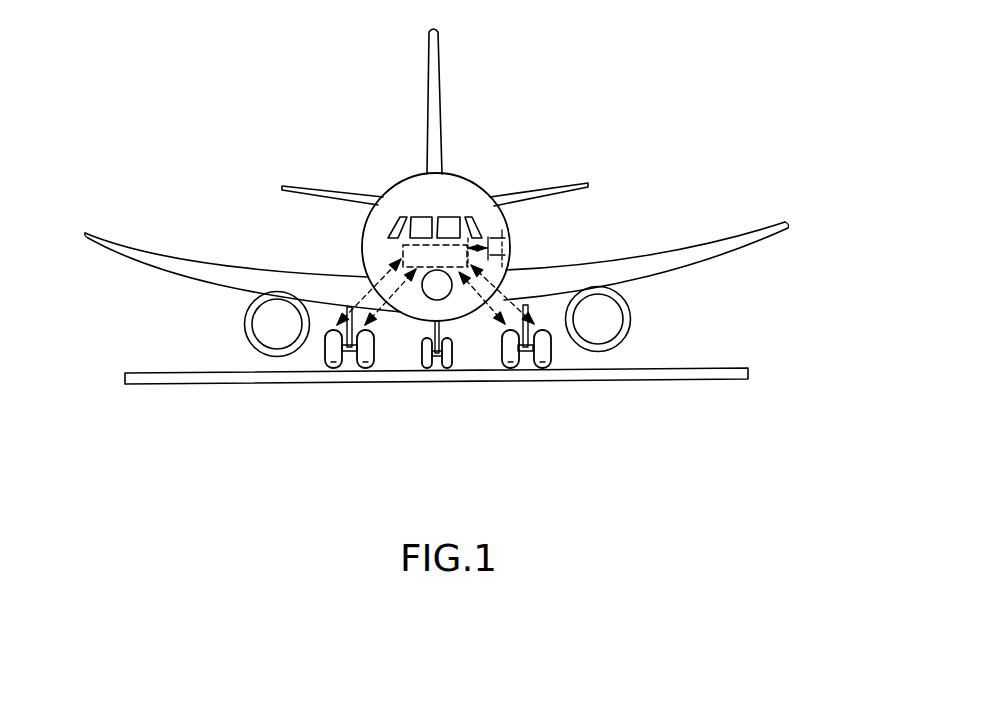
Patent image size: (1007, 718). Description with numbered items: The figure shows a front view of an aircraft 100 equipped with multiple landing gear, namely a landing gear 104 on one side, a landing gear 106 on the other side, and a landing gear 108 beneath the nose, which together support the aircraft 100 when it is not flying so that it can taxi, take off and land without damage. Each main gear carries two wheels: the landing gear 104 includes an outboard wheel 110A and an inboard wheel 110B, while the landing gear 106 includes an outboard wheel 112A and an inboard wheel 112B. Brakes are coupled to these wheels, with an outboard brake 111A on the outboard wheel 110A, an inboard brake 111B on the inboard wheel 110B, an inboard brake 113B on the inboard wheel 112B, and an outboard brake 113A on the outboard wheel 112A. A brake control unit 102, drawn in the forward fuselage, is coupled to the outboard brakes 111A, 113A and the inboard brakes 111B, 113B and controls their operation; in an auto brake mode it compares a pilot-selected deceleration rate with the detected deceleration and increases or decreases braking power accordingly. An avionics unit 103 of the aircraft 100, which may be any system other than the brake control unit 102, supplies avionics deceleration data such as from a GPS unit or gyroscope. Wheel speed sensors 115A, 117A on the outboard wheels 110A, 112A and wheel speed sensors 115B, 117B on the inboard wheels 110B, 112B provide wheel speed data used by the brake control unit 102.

The aircraft 100 is at (255, 100).
The brake control unit 102 is at (387, 237).
The avionics unit 103 is at (524, 193).
The landing gear 104 is at (309, 400).
The landing gear 106 is at (553, 398).
The landing gear 108 is at (466, 327).
The outboard wheel 110A is at (330, 368).
The inboard wheel 110B is at (370, 369).
The outboard brake 111A is at (336, 328).
The inboard brake 111B is at (362, 328).
The outboard wheel 112A is at (552, 369).
The inboard wheel 112B is at (505, 369).
The outboard brake 113A is at (547, 328).
The inboard brake 113B is at (517, 328).
The wheel speed sensor 115A is at (335, 370).
The wheel speed sensor 115B is at (363, 370).
The wheel speed sensor 117A is at (543, 370).
The wheel speed sensor 117B is at (510, 370).